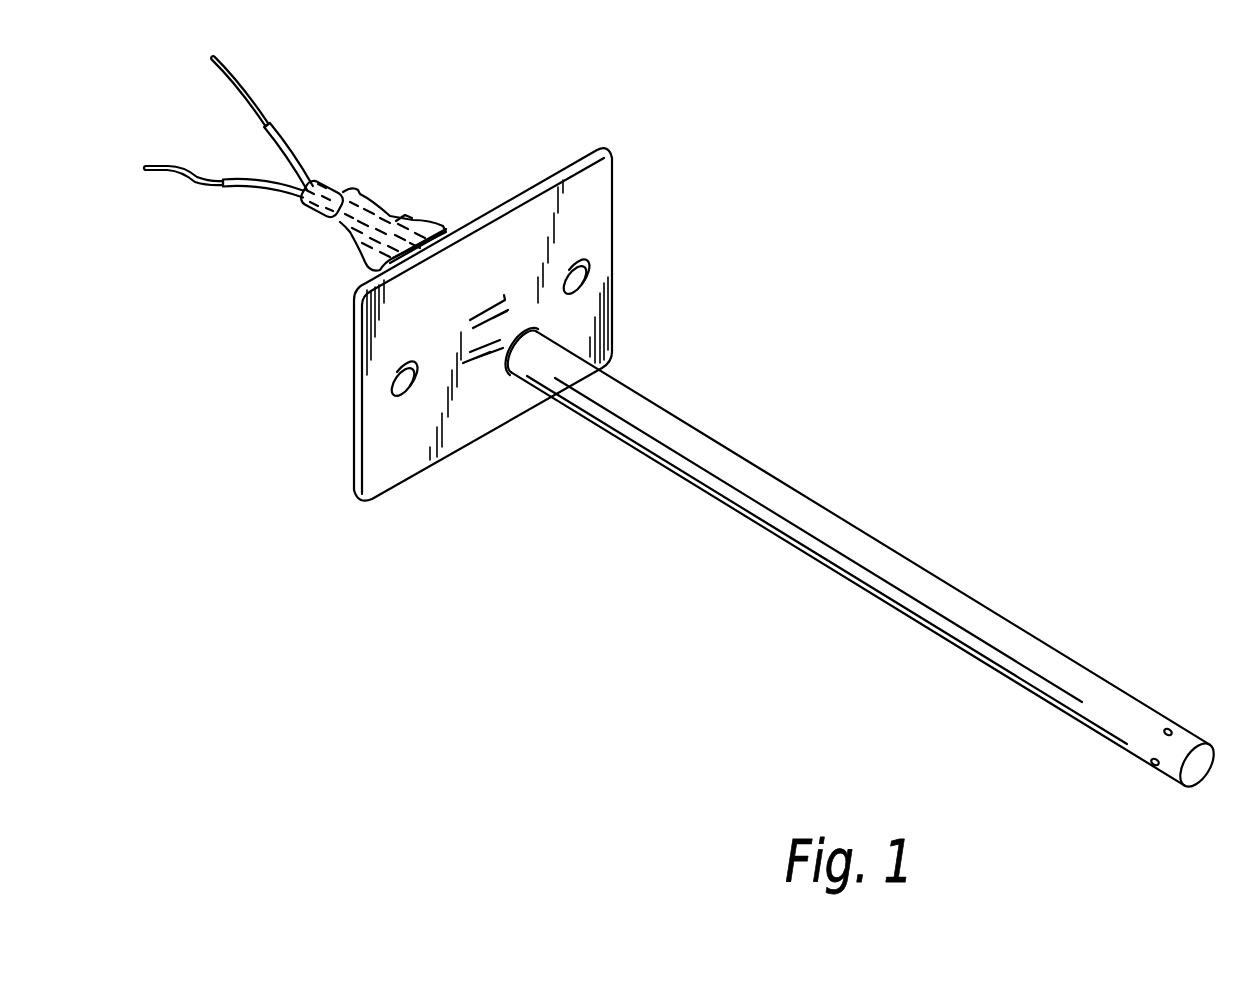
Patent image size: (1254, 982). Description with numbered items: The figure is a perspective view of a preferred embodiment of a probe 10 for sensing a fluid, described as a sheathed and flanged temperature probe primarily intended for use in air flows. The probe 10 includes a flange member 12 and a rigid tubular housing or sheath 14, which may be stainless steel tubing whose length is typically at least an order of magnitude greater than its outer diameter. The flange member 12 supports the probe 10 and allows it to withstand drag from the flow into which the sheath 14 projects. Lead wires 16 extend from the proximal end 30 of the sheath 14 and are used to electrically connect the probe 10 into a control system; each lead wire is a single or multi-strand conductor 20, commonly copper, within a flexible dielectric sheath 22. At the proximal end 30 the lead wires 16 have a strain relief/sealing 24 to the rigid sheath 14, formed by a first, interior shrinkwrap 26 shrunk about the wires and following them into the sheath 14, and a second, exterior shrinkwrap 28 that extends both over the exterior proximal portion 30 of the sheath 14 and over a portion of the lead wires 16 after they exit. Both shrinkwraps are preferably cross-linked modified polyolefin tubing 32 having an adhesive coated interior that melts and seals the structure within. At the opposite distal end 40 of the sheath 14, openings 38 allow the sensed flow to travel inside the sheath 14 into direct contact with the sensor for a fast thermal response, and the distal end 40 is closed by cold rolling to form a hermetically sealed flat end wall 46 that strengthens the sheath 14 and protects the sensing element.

The probe 10 is at (777, 435).
The flange member 12 is at (583, 195).
The sheath 14 is at (865, 543).
The lead wires 16 is at (273, 135).
The conductor 20 is at (237, 72).
The dielectric sheath 22 is at (287, 157).
The strain relief/sealing 24 is at (418, 142).
The interior shrinkwrap 26 is at (327, 187).
The exterior shrinkwrap 28 is at (353, 240).
The proximal end 30 is at (420, 230).
The polyolefin tubing 32 is at (403, 217).
The openings 38 is at (1170, 727).
The distal end 40 is at (1107, 710).
The end wall 46 is at (1193, 773).